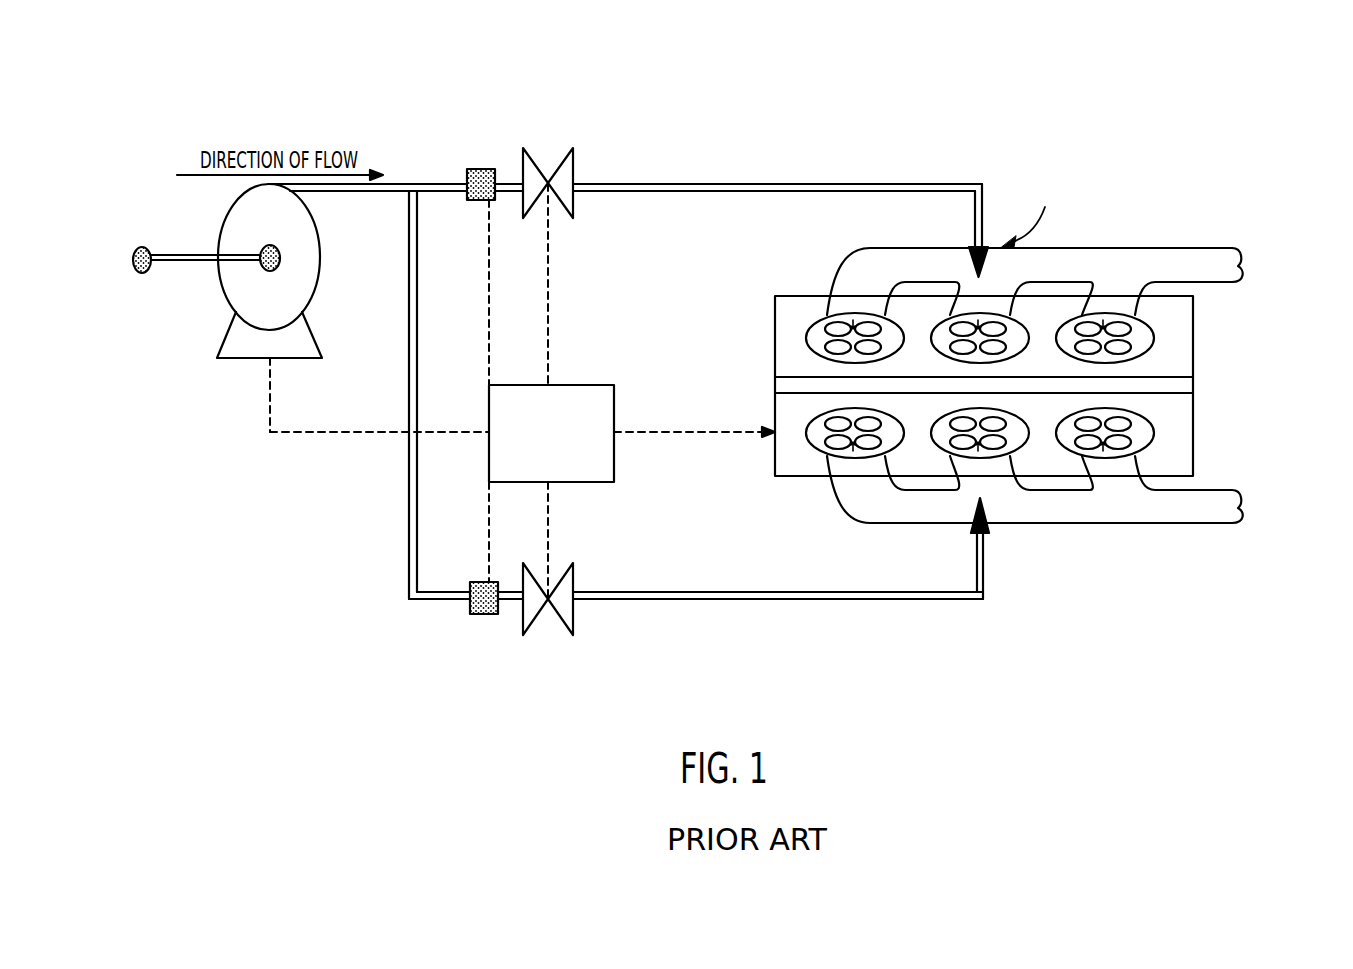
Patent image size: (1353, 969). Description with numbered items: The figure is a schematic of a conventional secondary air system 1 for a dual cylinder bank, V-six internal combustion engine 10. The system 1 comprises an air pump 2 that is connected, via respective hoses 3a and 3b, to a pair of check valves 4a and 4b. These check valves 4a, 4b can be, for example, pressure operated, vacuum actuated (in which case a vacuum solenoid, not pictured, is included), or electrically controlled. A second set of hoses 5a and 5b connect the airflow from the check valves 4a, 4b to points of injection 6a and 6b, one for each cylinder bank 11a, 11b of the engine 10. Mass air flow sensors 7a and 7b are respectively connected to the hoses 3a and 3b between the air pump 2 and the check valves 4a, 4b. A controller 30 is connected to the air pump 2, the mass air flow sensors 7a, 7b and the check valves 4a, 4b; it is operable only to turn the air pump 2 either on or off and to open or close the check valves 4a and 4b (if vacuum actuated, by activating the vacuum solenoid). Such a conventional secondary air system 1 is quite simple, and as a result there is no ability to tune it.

The secondary air system 1 is at (760, 58).
The air pump 2 is at (320, 282).
The hose 3a is at (427, 184).
The hose 3b is at (409, 551).
The check valve 4a is at (572, 208).
The check valve 4b is at (573, 627).
The hose 5a is at (873, 183).
The hose 5b is at (803, 600).
The point of injection 6a is at (1208, 246).
The point of injection 6b is at (1070, 524).
The mass air flow sensor 7a is at (482, 202).
The mass air flow sensor 7b is at (487, 582).
The internal combustion engine 10 is at (783, 384).
The cylinder bank 11a is at (775, 317).
The cylinder bank 11b is at (780, 468).
The controller 30 is at (615, 470).